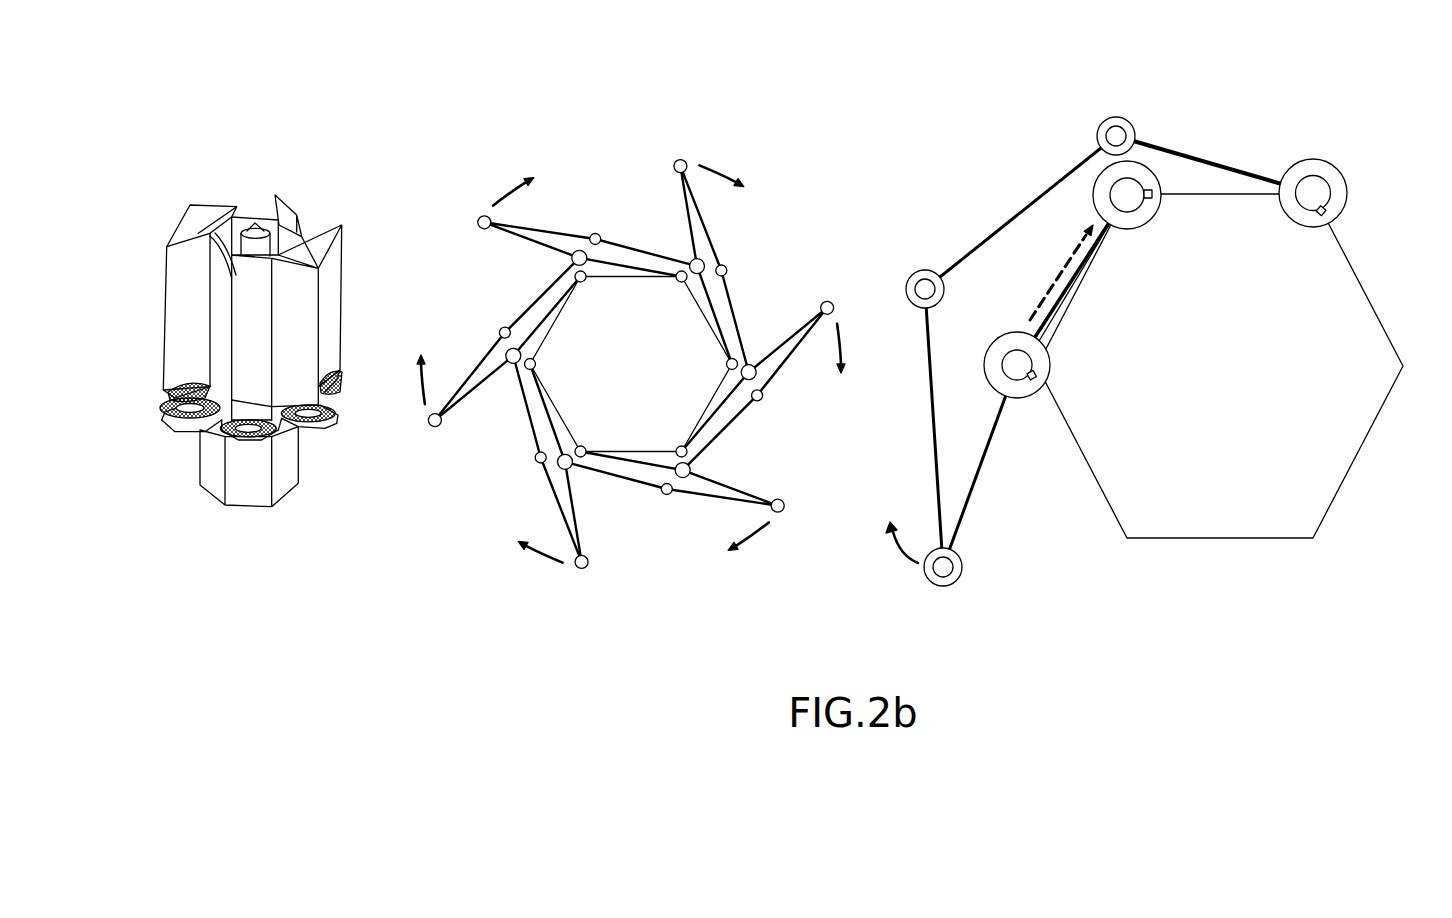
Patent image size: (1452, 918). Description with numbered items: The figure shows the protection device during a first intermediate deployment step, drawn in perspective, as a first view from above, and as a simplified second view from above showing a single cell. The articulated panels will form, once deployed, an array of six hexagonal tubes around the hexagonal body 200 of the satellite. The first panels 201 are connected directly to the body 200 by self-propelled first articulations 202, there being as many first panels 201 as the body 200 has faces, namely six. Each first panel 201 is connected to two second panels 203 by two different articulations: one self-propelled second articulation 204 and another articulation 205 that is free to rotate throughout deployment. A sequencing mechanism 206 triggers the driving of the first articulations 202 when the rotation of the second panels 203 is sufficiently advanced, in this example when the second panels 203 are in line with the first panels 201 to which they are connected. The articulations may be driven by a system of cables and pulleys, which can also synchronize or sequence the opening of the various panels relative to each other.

The body of the satellite 200 is at (282, 483).
The first panel 201 is at (628, 262).
The first articulation 202 is at (677, 283).
The second panel 203 is at (1003, 223).
The second articulation 204 is at (1033, 360).
The free articulation 205 is at (1110, 118).
The sequencing mechanism 206 is at (1052, 288).